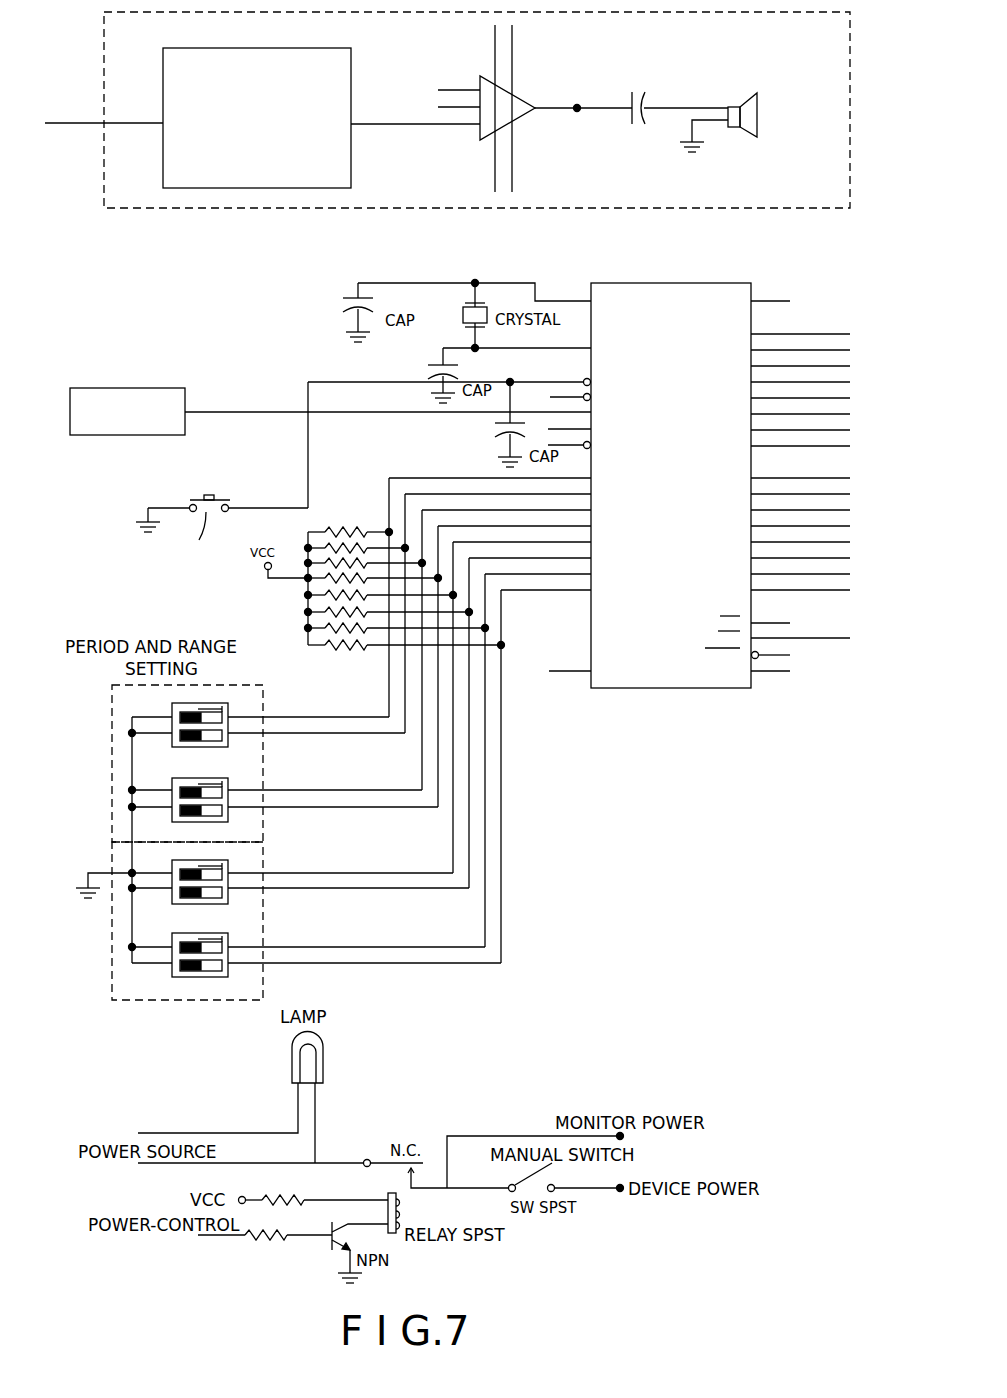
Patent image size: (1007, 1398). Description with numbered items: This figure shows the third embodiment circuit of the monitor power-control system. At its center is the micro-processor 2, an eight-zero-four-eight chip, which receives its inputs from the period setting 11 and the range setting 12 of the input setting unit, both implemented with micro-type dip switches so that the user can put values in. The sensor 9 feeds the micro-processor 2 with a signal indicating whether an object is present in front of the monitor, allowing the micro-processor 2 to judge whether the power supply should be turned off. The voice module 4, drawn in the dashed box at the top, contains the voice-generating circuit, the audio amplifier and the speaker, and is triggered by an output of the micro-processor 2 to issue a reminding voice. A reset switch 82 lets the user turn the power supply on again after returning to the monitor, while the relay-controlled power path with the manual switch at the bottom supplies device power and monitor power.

The micro-processor 2 is at (662, 318).
The voice module 4 is at (258, 208).
The sensor 9 is at (135, 388).
The reset switch 82 is at (215, 528).
The period setting 11 is at (112, 738).
The range setting DIP switches 12 is at (112, 967).